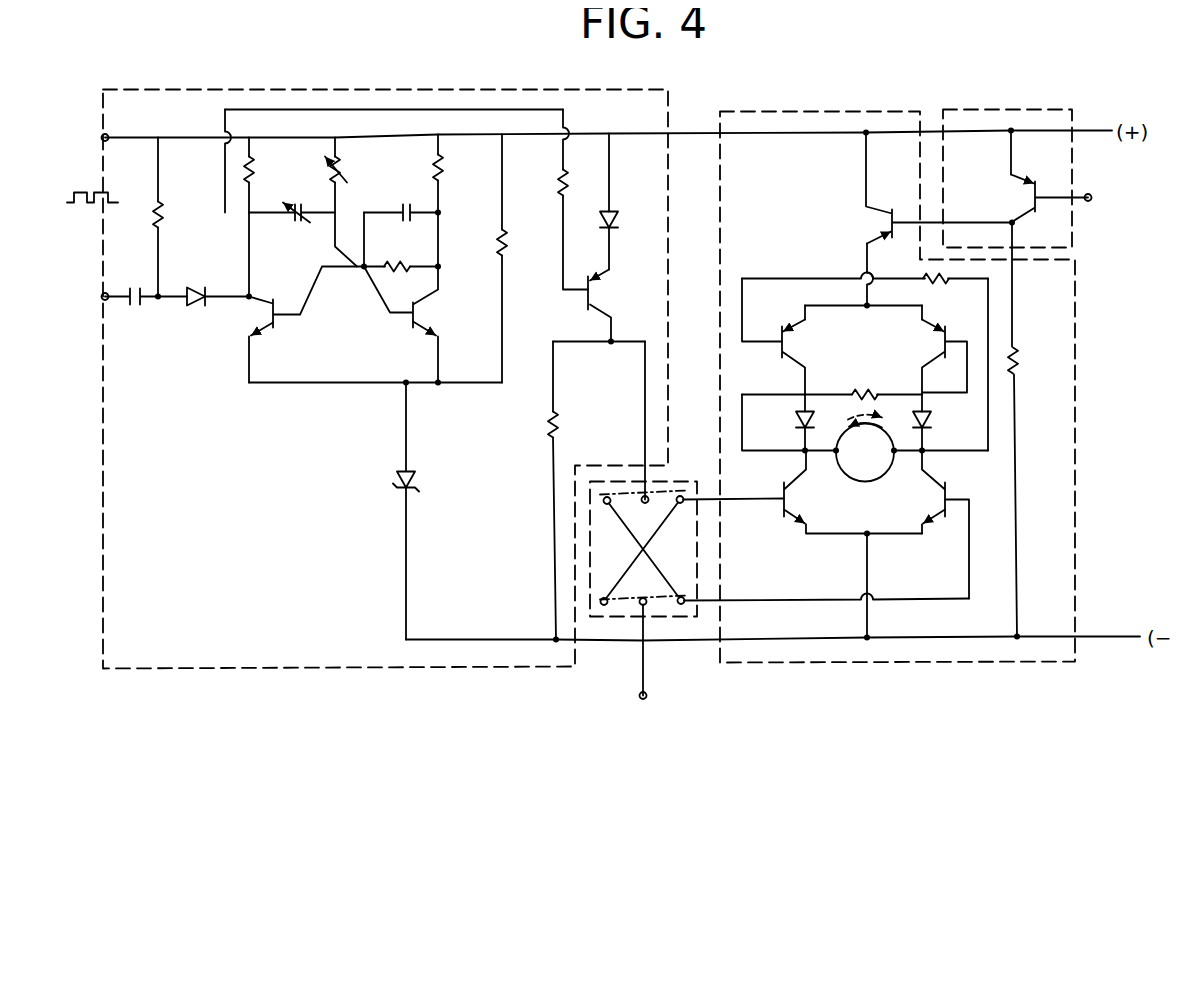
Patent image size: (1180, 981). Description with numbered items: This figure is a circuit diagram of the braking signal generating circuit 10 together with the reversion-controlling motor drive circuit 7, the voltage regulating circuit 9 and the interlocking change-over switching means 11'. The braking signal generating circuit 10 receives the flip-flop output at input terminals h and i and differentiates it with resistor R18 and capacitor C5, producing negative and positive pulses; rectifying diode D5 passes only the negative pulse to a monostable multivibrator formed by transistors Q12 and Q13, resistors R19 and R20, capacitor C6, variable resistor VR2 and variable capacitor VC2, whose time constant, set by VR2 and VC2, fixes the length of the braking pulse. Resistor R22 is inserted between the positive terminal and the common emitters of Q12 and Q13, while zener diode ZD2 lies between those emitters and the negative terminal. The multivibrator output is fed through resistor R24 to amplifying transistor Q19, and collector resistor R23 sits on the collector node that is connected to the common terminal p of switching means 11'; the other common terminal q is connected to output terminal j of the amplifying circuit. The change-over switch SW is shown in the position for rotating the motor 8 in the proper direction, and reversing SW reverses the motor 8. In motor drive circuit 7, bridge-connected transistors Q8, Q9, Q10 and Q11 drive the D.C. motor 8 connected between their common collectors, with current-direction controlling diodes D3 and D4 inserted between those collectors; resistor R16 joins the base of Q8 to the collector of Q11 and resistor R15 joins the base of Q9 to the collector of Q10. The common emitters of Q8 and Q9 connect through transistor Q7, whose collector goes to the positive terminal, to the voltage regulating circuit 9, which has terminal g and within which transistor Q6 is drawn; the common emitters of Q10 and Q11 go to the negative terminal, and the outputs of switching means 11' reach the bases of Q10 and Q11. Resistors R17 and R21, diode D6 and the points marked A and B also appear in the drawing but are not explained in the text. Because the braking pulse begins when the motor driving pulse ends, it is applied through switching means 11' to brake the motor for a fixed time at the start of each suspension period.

The motor drive circuit 7 is at (827, 112).
The D.C. motor 8 is at (866, 482).
The voltage regulating circuit 9 is at (997, 110).
The braking signal generating circuit 10 is at (257, 669).
The interlocking change-over switching means 11' is at (637, 591).
The change-over switch SW is at (627, 607).
The terminal A is at (650, 622).
The terminal B is at (638, 436).
The common terminal p is at (647, 516).
The common terminal q is at (642, 585).
The input terminal h is at (111, 125).
The input terminal i is at (106, 284).
The output terminal j is at (642, 668).
The input terminal g is at (1099, 201).
The resistor R15 is at (871, 394).
The resistor R16 is at (940, 283).
The resistor R17 is at (1020, 356).
The differentiating resistor R18 is at (170, 213).
The resistor R19 is at (258, 168).
The resistor R20 is at (396, 266).
The resistor R21 is at (447, 167).
The resistor R22 is at (510, 240).
The collector resistor R23 is at (548, 425).
The resistor R24 is at (557, 186).
The variable resistor VR2 is at (346, 170).
The variable capacitor VC2 is at (297, 224).
The capacitor C5 is at (136, 306).
The capacitor C6 is at (404, 203).
The current direction controlling diode D3 is at (798, 419).
The current direction controlling diode D4 is at (928, 419).
The rectifying diode D5 is at (193, 307).
The diode D6 is at (616, 211).
The zener diode ZD2 is at (400, 470).
The transistor Q6 is at (1026, 202).
The transistor Q7 is at (882, 223).
The bridge connection transistor Q8 is at (791, 342).
The bridge connection transistor Q9 is at (942, 342).
The bridge connection transistor Q10 is at (792, 498).
The bridge connection transistor Q11 is at (938, 498).
The transistor Q12 is at (268, 318).
The transistor Q13 is at (425, 314).
The amplifying transistor Q19 is at (600, 290).